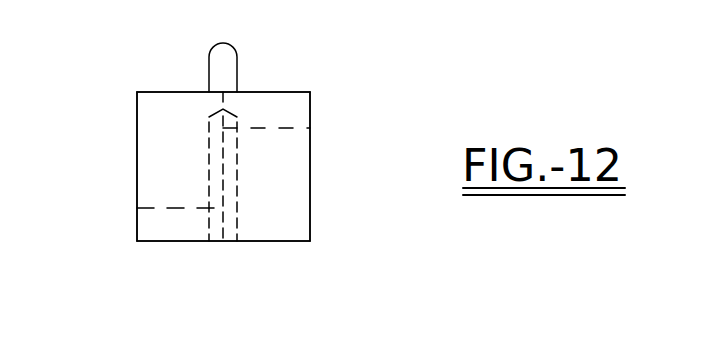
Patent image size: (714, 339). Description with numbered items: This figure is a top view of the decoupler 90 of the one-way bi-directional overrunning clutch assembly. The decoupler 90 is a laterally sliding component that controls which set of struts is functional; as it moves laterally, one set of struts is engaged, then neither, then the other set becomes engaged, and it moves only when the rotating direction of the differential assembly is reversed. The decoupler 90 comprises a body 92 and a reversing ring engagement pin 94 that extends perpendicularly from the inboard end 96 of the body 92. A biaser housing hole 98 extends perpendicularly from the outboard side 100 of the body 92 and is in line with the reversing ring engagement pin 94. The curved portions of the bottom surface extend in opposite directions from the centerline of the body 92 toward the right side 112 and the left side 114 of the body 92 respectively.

The decoupler 90 is at (320, 102).
The body 92 is at (303, 137).
The reversing ring engagement pin 94 is at (232, 47).
The inboard end 96 is at (175, 92).
The biaser housing hole 98 is at (212, 233).
The outboard side 100 is at (177, 241).
The right side 112 is at (310, 185).
The left side 114 is at (137, 134).